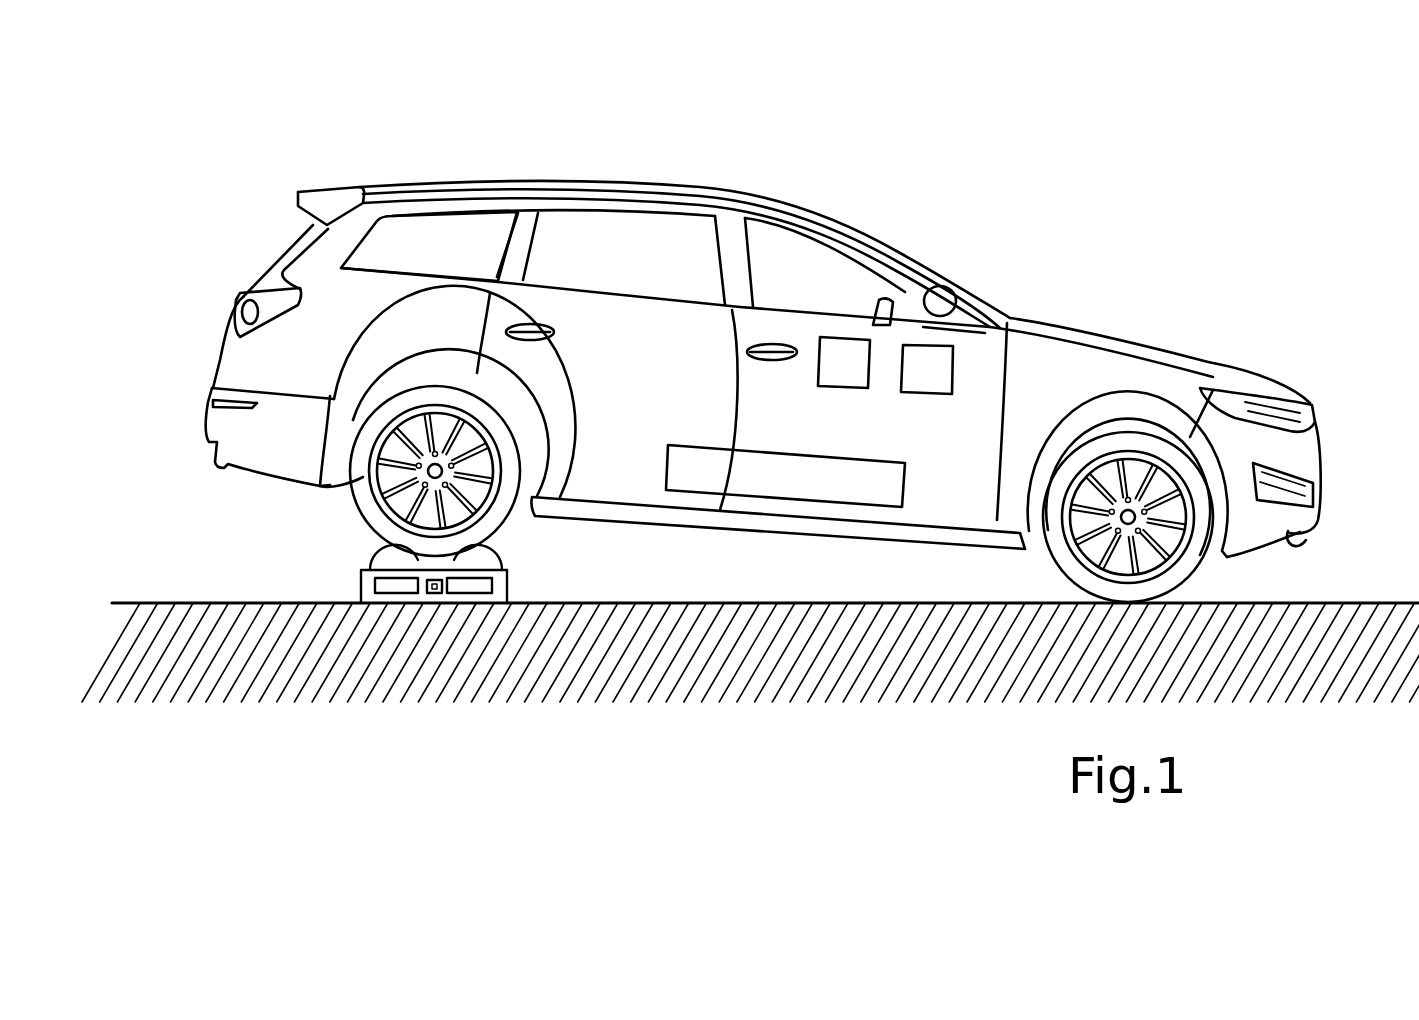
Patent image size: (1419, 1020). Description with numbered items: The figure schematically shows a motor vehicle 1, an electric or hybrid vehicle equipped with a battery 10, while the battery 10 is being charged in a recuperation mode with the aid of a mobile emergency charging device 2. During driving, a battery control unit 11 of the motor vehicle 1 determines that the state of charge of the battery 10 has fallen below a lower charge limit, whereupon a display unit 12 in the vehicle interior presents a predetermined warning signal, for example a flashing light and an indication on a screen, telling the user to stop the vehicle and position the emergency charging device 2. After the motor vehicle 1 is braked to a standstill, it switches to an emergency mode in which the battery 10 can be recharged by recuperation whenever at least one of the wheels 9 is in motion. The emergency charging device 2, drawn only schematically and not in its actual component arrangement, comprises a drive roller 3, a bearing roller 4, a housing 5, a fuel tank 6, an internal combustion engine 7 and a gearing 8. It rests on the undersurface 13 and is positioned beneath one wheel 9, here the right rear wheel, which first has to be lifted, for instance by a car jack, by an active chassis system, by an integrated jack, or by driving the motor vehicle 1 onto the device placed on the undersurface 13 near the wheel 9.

The motor vehicle 1 is at (905, 172).
The mobile emergency charging device 2 is at (532, 593).
The drive roller 3 is at (388, 560).
The bearing roller 4 is at (478, 560).
The housing 5 is at (362, 575).
The fuel tank 6 is at (466, 596).
The internal combustion engine 7 is at (390, 596).
The gearing 8 is at (434, 596).
The wheels 9 is at (363, 477).
The battery 10 is at (790, 470).
The battery control unit 11 is at (847, 358).
The display unit 12 is at (937, 355).
The undersurface 13 is at (1296, 660).